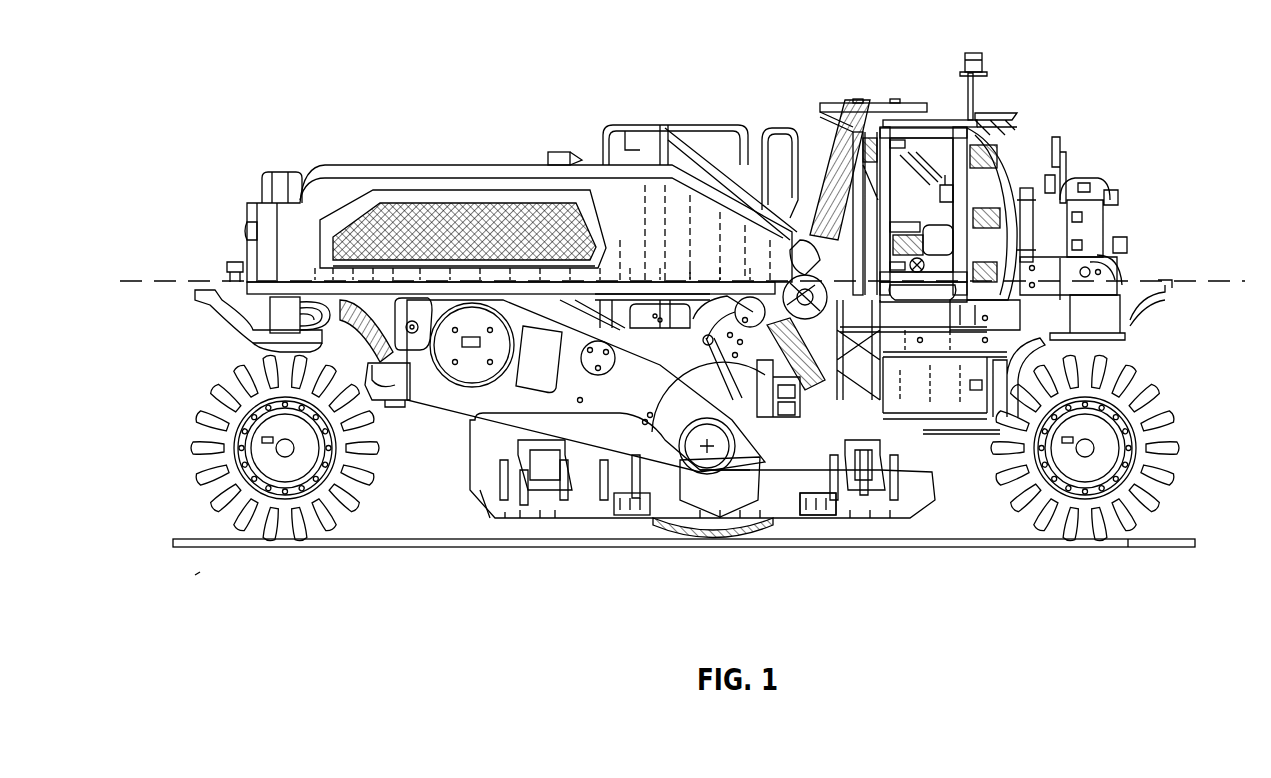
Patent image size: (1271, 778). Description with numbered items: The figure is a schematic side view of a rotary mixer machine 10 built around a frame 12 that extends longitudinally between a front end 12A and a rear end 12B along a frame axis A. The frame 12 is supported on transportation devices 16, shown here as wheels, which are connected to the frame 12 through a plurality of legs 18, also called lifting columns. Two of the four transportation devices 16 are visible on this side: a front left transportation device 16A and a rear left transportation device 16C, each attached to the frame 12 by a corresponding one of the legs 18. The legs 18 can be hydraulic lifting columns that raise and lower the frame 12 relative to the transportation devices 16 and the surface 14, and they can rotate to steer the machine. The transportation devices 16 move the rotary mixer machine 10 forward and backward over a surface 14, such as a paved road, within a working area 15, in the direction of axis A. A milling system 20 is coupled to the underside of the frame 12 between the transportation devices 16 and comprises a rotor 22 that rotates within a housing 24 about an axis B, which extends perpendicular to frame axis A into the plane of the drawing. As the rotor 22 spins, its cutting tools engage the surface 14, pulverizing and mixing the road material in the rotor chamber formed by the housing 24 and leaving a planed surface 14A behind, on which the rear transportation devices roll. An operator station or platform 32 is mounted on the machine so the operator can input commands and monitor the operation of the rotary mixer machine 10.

The rotary mixer machine 10 is at (616, 60).
The frame 12 is at (375, 305).
The front end 12A is at (248, 235).
The rear end 12B is at (1100, 272).
The surface 14 is at (330, 548).
The planed surface 14A is at (1128, 546).
The working area 15 is at (196, 575).
The transportation devices 16 is at (690, 447).
The front left transportation device 16A is at (240, 483).
The rear left transportation device 16C is at (1170, 460).
The legs 18 is at (272, 330).
The milling system 20 is at (588, 522).
The rotor 22 is at (708, 532).
The housing 24 is at (765, 500).
The operator station or platform 32 is at (1035, 130).
The frame axis A is at (148, 285).
The rotor axis B is at (702, 452).